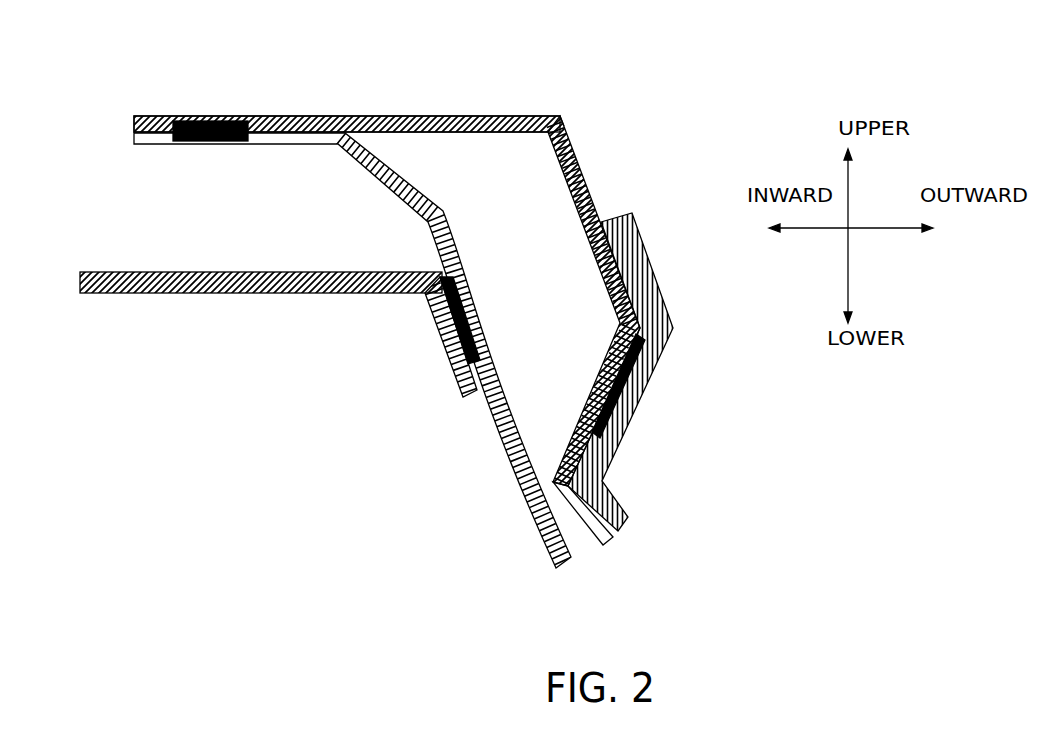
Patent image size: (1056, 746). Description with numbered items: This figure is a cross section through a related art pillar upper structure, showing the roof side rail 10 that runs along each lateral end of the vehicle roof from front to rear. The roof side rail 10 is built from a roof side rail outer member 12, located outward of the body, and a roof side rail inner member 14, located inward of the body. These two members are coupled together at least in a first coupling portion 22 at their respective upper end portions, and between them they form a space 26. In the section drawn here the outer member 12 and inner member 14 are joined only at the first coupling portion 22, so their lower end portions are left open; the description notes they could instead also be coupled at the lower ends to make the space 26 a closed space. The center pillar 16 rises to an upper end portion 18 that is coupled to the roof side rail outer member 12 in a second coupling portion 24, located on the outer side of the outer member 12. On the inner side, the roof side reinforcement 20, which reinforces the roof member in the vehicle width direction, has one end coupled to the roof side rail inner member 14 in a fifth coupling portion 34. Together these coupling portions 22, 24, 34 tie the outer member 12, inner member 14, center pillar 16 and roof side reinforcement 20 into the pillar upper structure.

The roof side rail 10 is at (317, 105).
The roof side rail outer member 12 is at (573, 152).
The roof side rail inner member 14 is at (508, 450).
The center pillar 16 is at (630, 518).
The upper end portion 18 is at (637, 405).
The roof side reinforcement 20 is at (285, 297).
The first coupling portion 22 is at (192, 114).
The second coupling portion 24 is at (637, 363).
The space 26 is at (481, 203).
The fifth coupling portion 34 is at (445, 338).